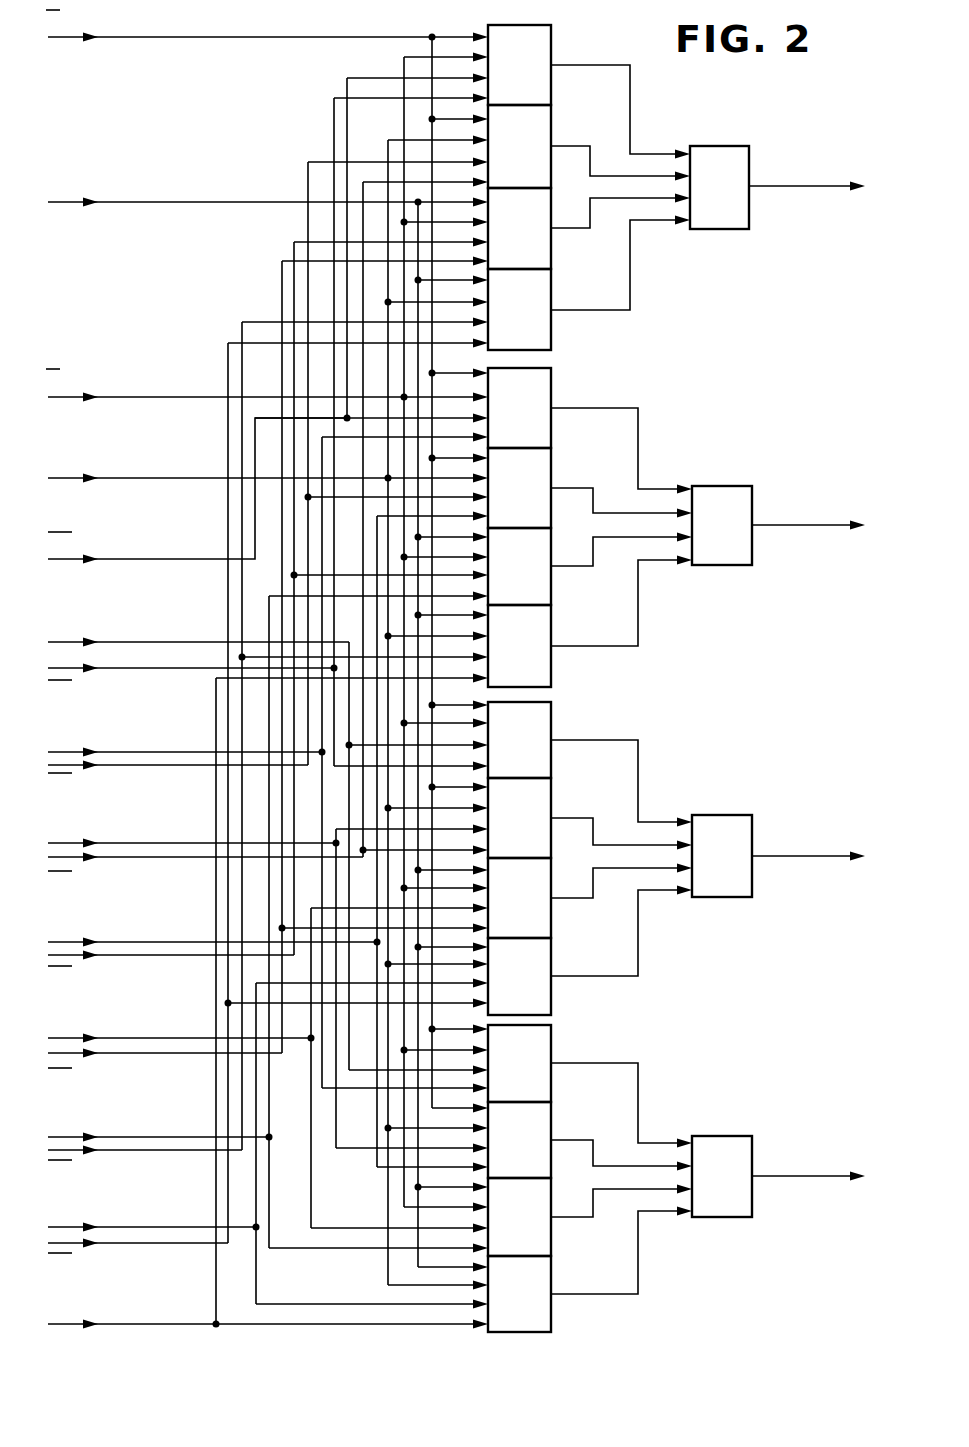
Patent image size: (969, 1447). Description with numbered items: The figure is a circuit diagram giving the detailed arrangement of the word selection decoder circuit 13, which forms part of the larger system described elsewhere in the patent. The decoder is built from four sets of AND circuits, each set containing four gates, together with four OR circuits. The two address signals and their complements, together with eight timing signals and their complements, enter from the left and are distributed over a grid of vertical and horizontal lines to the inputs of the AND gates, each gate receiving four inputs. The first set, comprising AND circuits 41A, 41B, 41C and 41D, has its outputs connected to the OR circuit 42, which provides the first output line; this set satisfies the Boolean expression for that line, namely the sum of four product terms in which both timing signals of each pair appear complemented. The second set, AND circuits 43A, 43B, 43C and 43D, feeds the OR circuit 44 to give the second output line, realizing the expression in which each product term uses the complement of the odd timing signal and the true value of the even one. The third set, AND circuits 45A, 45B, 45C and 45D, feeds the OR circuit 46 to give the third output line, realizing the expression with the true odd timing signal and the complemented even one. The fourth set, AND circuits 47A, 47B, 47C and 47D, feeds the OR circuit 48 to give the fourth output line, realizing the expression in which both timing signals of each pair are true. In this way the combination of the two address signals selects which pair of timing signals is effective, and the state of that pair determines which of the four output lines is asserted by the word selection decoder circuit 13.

The word selection decoder circuit 13 is at (457, 678).
The AND circuit 41A is at (553, 45).
The AND circuit 41B is at (553, 125).
The AND circuit 41C is at (553, 248).
The AND circuit 41D is at (553, 328).
The OR circuit 42 is at (718, 230).
The AND circuit 43A is at (553, 425).
The AND circuit 43B is at (553, 477).
The AND circuit 43C is at (553, 583).
The AND circuit 43D is at (553, 670).
The OR circuit 44 is at (730, 483).
The AND circuit 45A is at (553, 727).
The AND circuit 45B is at (553, 790).
The AND circuit 45C is at (553, 912).
The AND circuit 45D is at (553, 998).
The OR circuit 46 is at (727, 813).
The AND circuit 47A is at (553, 1050).
The AND circuit 47B is at (553, 1115).
The AND circuit 47C is at (553, 1238).
The AND circuit 47D is at (553, 1325).
The OR circuit 48 is at (729, 1135).